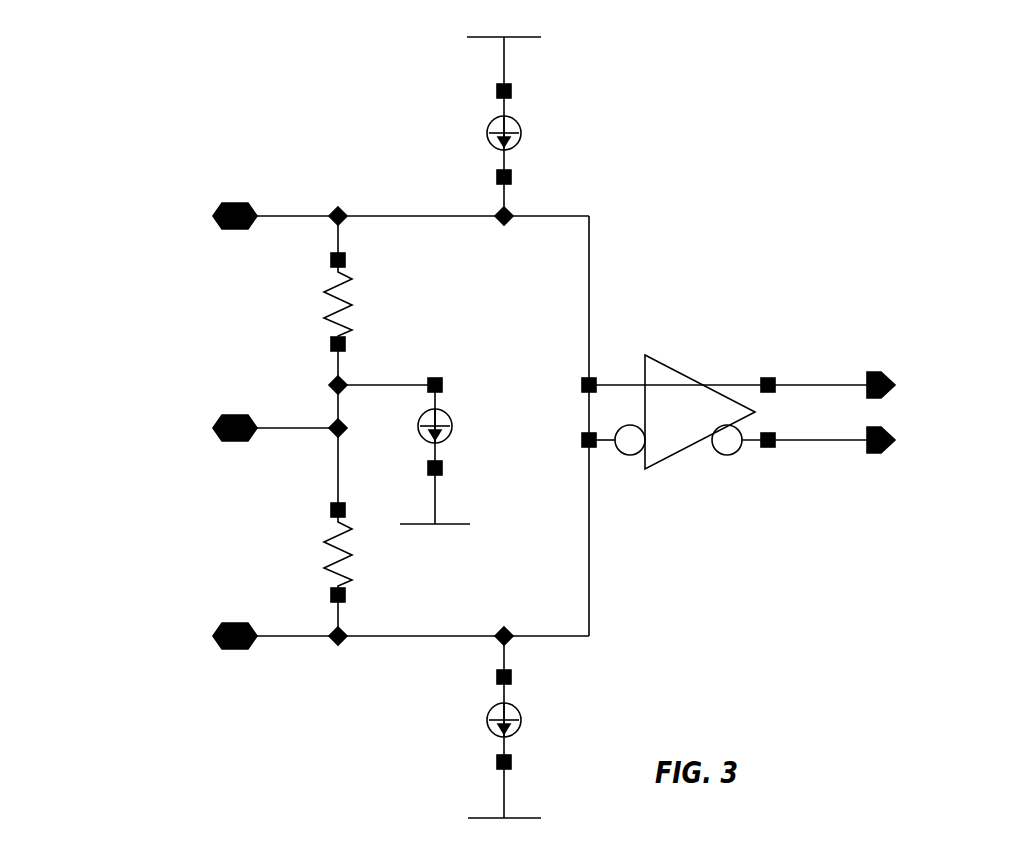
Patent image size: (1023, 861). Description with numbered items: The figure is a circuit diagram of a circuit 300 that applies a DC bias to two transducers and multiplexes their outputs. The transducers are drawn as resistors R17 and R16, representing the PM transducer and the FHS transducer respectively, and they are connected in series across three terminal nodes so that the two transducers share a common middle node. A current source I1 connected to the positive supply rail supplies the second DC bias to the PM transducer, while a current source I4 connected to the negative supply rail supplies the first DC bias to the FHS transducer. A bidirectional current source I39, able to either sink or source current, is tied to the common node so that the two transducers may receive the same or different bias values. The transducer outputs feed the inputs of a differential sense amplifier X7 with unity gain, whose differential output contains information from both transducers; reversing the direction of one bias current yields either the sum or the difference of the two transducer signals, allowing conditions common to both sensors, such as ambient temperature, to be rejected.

The circuit 300 is at (922, 148).
The current source I1 (idc=IBias2) I1 is at (549, 134).
The resistor R17 (r=R_PM) R17 is at (365, 302).
The resistor R16 (r=R_FHS) R16 is at (368, 552).
The current source I39 (idc=IBias2-IBias1) I39 is at (510, 426).
The current source I4 (idc=IBias1) I4 is at (548, 719).
The differential amplifier X7 (gain:1) X7 is at (697, 412).